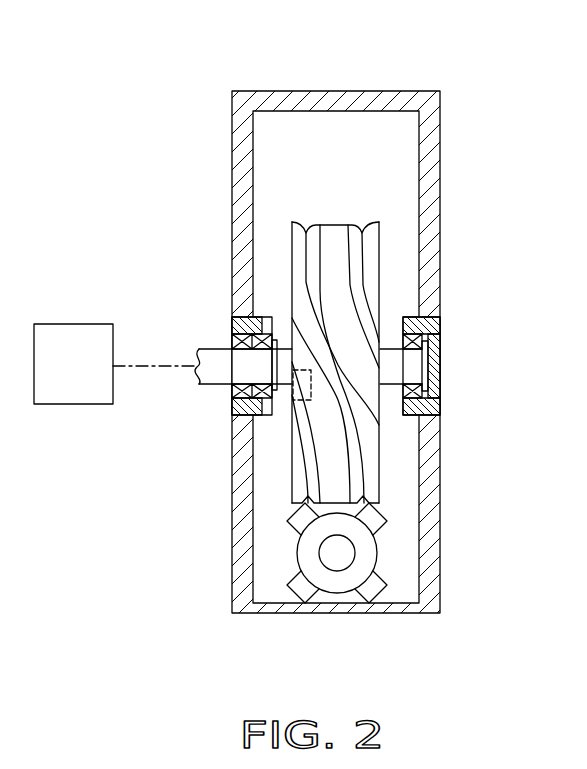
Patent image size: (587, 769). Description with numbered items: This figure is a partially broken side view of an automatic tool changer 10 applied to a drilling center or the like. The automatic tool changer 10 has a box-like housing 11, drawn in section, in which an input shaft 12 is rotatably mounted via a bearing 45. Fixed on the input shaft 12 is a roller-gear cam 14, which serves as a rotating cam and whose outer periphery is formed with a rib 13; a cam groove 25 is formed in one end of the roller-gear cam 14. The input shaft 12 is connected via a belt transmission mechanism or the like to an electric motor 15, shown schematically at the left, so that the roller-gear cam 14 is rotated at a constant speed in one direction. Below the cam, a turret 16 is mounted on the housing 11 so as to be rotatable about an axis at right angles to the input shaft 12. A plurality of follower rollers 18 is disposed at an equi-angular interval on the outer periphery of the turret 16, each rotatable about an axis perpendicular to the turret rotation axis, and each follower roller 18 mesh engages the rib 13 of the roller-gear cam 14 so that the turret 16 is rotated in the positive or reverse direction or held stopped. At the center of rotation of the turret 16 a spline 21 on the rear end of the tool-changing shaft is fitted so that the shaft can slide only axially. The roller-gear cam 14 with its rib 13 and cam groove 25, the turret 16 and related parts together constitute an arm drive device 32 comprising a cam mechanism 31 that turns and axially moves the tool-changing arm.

The automatic tool changer 10 is at (293, 350).
The housing 11 is at (242, 152).
The input shaft 12 is at (210, 358).
The rib 13 is at (409, 326).
The roller-gear cam 14 is at (332, 232).
The electric motor 15 is at (73, 335).
The turret 16 is at (367, 552).
The follower roller 18 is at (302, 520).
The spline 21 is at (338, 557).
The cam groove 25 is at (293, 400).
The cam mechanism 31 is at (389, 257).
The arm drive device 32 is at (394, 202).
The bearing 45 is at (430, 333).